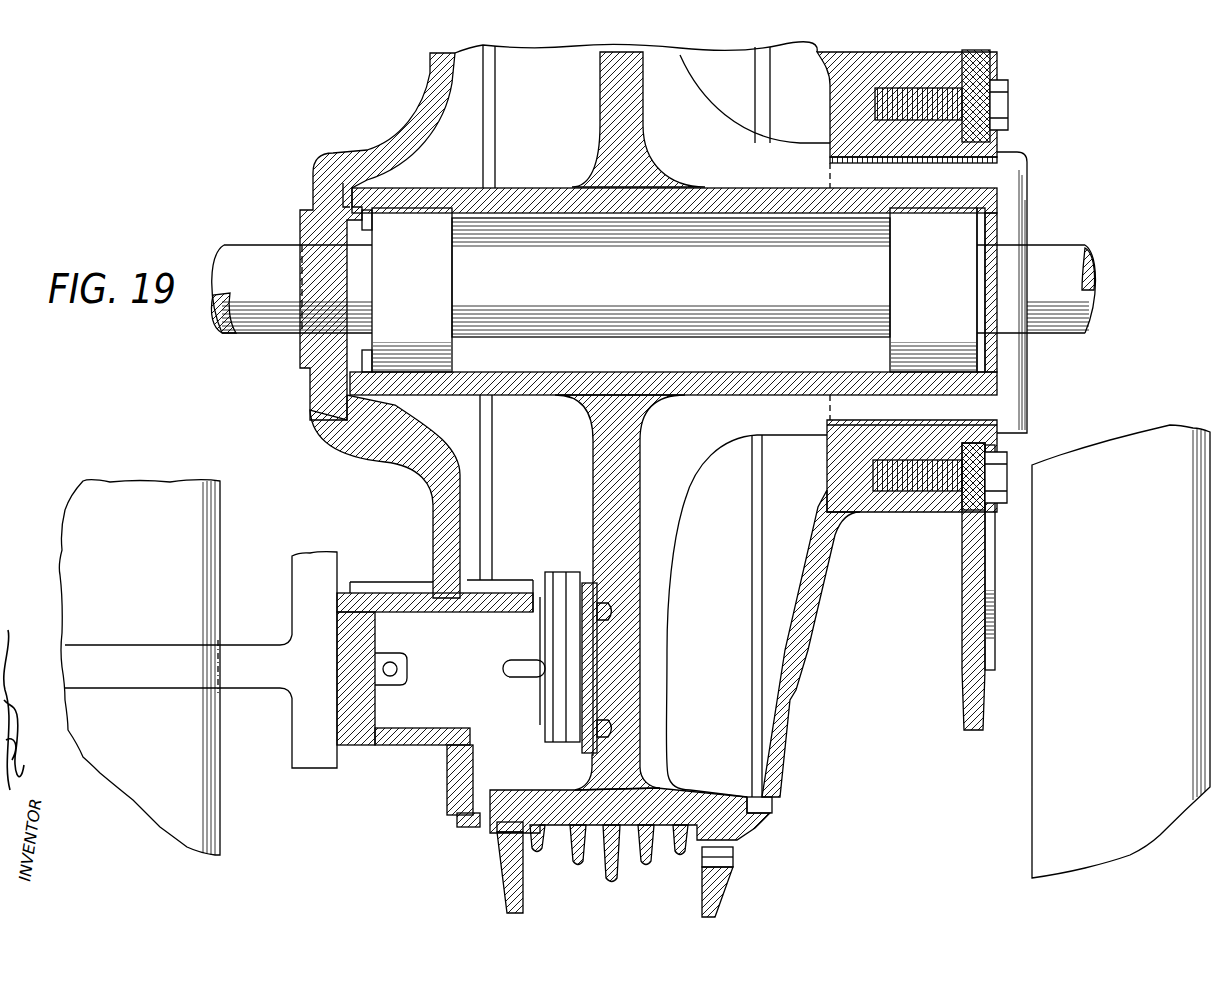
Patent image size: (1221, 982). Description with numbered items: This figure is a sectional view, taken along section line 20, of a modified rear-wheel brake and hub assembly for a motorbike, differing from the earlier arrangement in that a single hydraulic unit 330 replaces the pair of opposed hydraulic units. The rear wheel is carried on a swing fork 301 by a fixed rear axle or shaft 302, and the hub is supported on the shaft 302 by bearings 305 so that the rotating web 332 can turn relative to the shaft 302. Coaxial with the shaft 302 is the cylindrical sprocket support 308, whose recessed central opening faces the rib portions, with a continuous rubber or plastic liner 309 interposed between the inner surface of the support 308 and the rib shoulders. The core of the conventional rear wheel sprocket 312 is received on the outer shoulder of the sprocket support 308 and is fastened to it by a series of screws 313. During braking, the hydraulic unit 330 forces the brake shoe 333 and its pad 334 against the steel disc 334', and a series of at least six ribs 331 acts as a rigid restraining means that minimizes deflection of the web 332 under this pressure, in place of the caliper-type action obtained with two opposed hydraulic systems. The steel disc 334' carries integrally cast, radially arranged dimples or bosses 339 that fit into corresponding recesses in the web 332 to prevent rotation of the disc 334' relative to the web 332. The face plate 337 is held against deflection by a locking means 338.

The section line 20 is at (55, 645).
The swing fork 301 is at (125, 510).
The shaft 302 is at (1050, 262).
The bearings 305 is at (420, 272).
The sprocket support 308 is at (860, 80).
The liner 309 is at (900, 165).
The rear wheel sprocket 312 is at (1000, 672).
The screws 313 is at (1010, 480).
The hydraulic unit 330 is at (505, 565).
The ribs 331 is at (675, 470).
The web 332 is at (623, 688).
The brake shoe 333 is at (548, 583).
The pad 334 is at (533, 721).
The steel disc 334' is at (636, 657).
The face plate 337 is at (392, 597).
The locking means 338 is at (250, 633).
The bosses 339 is at (607, 608).